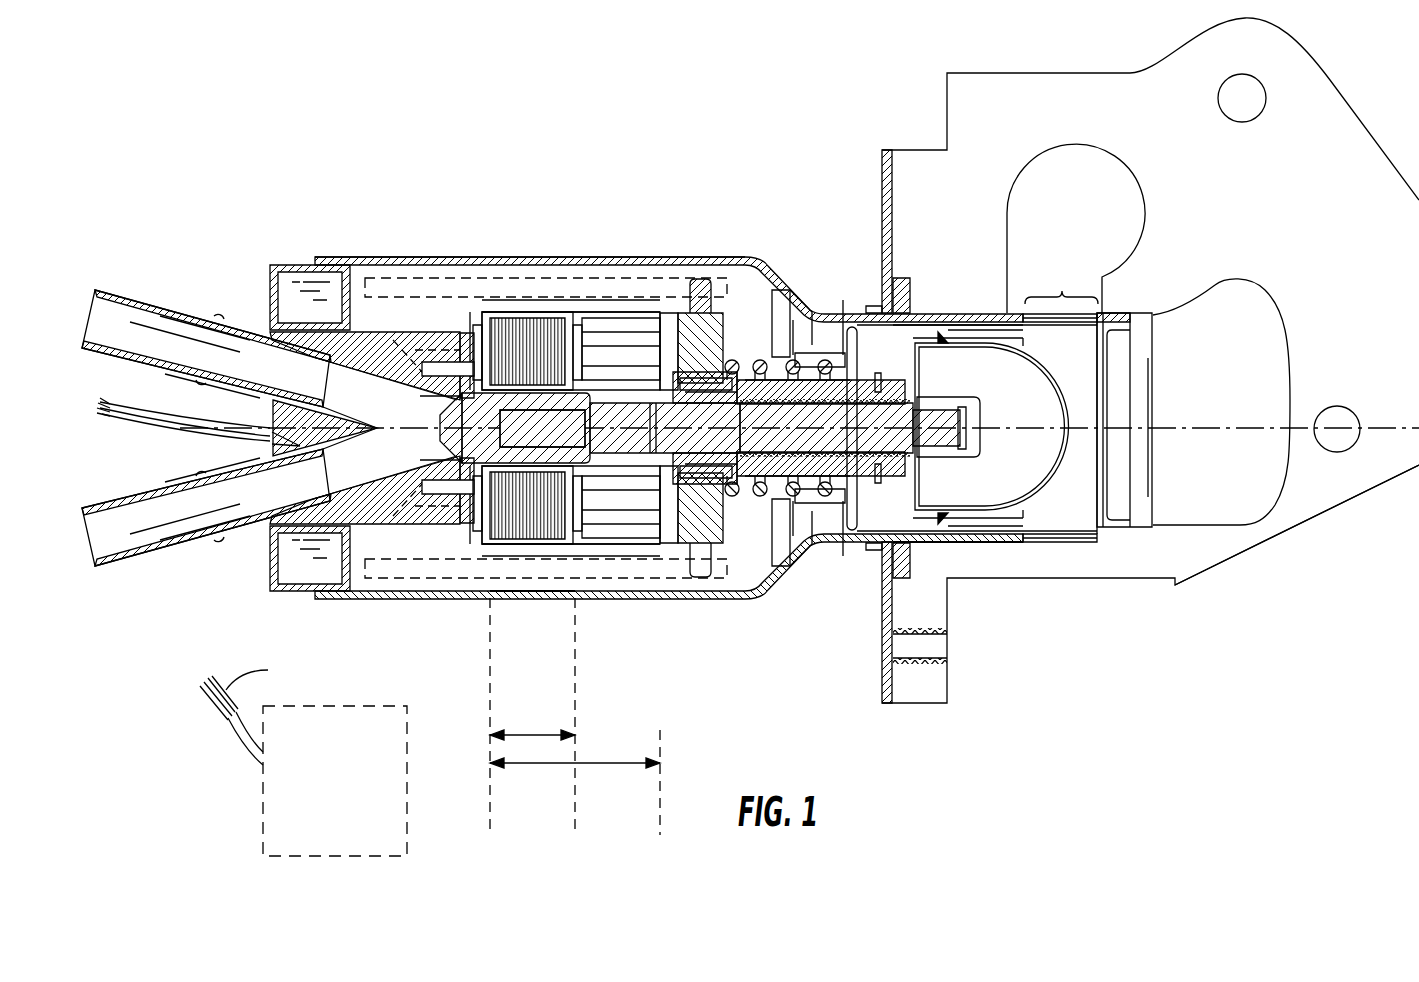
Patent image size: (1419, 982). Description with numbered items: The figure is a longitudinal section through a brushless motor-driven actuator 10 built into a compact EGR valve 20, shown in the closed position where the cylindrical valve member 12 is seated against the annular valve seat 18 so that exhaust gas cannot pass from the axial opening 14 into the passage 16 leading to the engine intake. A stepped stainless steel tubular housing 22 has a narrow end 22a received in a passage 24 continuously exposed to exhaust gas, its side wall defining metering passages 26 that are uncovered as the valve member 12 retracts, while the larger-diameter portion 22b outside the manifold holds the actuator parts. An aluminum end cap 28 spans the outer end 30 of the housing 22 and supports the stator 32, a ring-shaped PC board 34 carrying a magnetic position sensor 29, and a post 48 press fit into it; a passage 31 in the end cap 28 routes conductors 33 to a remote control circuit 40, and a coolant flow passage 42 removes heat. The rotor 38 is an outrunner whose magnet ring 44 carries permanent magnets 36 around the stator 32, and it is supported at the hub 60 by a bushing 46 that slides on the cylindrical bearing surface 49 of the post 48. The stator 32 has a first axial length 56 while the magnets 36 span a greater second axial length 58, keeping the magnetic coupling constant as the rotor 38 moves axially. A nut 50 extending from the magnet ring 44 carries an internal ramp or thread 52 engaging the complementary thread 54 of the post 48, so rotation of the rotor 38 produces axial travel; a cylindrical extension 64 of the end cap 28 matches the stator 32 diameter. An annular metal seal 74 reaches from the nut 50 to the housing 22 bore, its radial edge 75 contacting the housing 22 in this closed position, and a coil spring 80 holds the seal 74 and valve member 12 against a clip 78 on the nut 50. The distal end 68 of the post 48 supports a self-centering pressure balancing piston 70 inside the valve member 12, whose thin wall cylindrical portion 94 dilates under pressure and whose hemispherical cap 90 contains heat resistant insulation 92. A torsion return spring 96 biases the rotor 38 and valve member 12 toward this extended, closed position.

The actuator 10 is at (456, 255).
The cylindrical valve member 12 is at (1040, 538).
The axial opening 14 is at (1130, 440).
The passage 16 is at (1076, 228).
The annular valve seat 18 is at (1115, 313).
The compact EGR valve 20 is at (836, 270).
The tubular housing 22 is at (398, 596).
The narrow end of the housing 22a is at (960, 545).
The portion of the housing 22b is at (498, 600).
The passage 24 is at (1221, 402).
The metering passages 26 is at (1061, 284).
The end cap 28 is at (268, 532).
The magnetic position sensor 29 is at (447, 352).
The outer end of the housing 30 is at (300, 262).
The passage 31 is at (272, 447).
The stator 32 is at (515, 320).
The conductors 33 is at (118, 420).
The PC board 34 is at (405, 330).
The magnets 36 is at (597, 345).
The rotor 38 is at (612, 310).
The control circuit 40 is at (303, 756).
The coolant flow passage 42 is at (148, 540).
The magnet ring 44 is at (492, 540).
The bushing 46 is at (712, 462).
The post 48 is at (635, 450).
The cylindrical bearing surface 49 is at (662, 455).
The nut 50 is at (742, 458).
The female ramp or thread 52 is at (850, 452).
The ramp or thread 54 is at (805, 500).
The first axial length 56 is at (540, 740).
The second axial length 58 is at (585, 768).
The hub 60 is at (712, 530).
The cylindrical extension 64 is at (438, 523).
The distal end 68 is at (928, 403).
The pressure balancing piston 70 is at (1010, 515).
The metal seal 74 is at (778, 330).
The annular radial edge 75 is at (770, 490).
The clip 78 is at (877, 470).
The coil spring 80 is at (762, 368).
The hemispherical cap 90 is at (1062, 492).
The heat resistant insulation 92 is at (992, 426).
The thin wall cylindrical portion 94 is at (966, 318).
The torsion return spring 96 is at (668, 285).